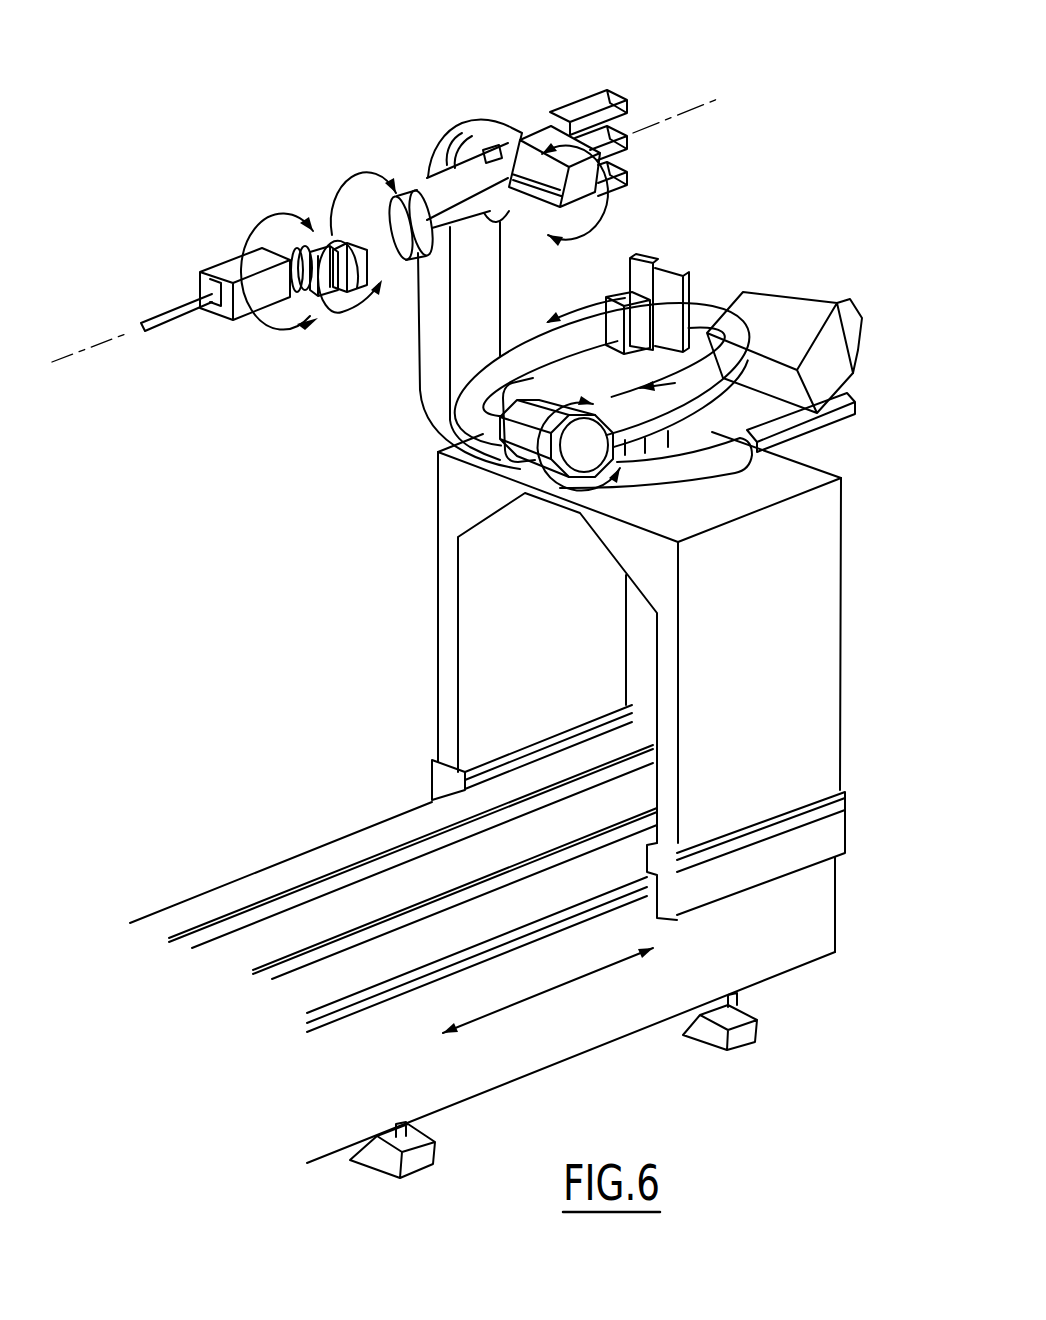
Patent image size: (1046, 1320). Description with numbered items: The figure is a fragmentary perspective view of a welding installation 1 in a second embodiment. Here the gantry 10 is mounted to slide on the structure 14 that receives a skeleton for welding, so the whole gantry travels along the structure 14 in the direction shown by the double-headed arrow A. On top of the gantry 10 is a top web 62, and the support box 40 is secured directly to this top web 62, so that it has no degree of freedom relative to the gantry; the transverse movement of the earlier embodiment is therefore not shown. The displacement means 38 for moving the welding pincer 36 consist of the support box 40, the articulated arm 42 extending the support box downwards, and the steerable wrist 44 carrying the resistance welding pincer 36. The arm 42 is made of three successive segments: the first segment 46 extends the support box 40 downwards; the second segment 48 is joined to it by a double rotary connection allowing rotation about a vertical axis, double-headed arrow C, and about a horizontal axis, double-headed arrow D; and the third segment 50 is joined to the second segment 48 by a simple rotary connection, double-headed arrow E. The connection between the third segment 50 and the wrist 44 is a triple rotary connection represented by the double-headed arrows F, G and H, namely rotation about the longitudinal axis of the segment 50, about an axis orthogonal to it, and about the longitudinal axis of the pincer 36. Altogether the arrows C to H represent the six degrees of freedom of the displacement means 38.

The welding installation 1 is at (778, 188).
The gantry 10 is at (837, 605).
The structure 14 is at (548, 1078).
The welding pincer 36 is at (173, 313).
The displacement means 38 is at (640, 92).
The support box 40 is at (760, 413).
The articulated arm 42 is at (433, 137).
The steerable wrist 44 is at (217, 252).
The first segment 46 is at (580, 377).
The second segment 48 is at (480, 297).
The third segment 50 is at (417, 193).
The top web 62 is at (815, 482).
The double-headed arrow A is at (577, 980).
The double-headed arrow C is at (707, 300).
The double-headed arrow D is at (555, 493).
The double-headed arrow E is at (597, 217).
The double-headed arrow F is at (373, 172).
The double-headed arrow G is at (367, 305).
The double-headed arrow H is at (273, 207).